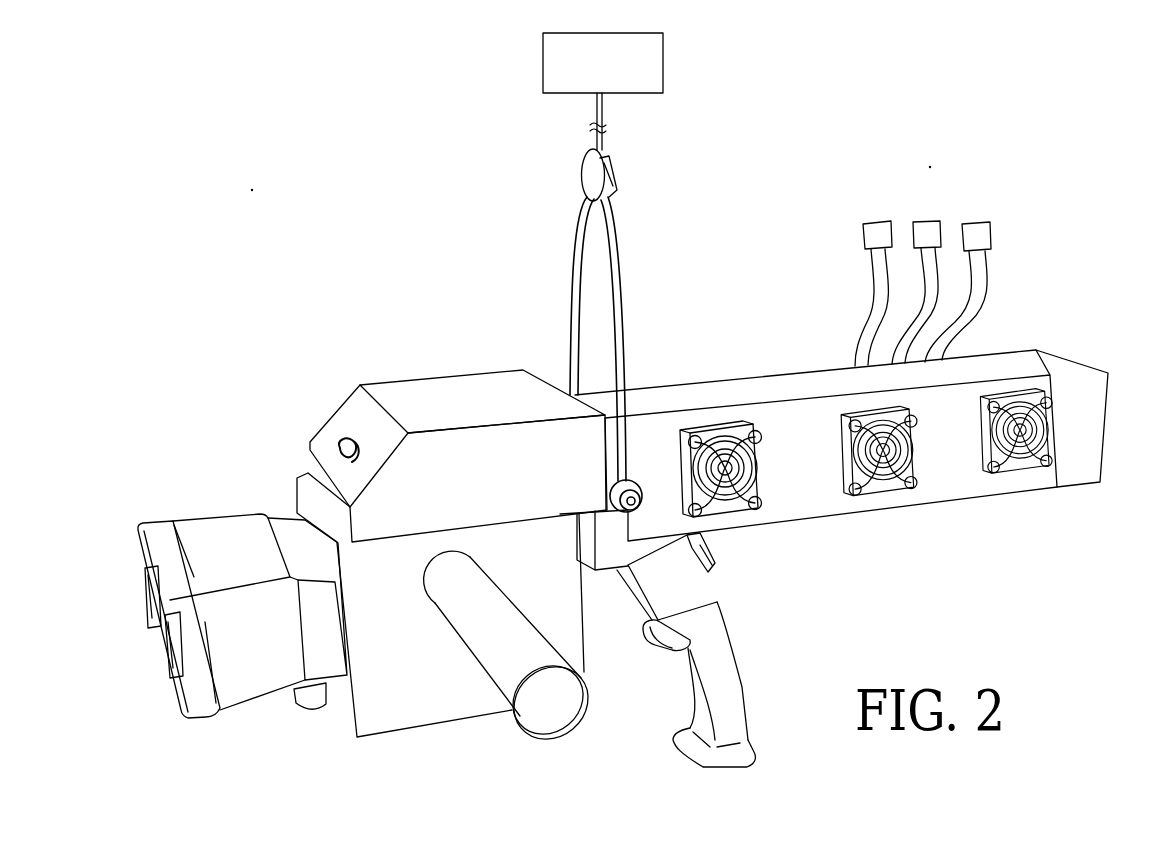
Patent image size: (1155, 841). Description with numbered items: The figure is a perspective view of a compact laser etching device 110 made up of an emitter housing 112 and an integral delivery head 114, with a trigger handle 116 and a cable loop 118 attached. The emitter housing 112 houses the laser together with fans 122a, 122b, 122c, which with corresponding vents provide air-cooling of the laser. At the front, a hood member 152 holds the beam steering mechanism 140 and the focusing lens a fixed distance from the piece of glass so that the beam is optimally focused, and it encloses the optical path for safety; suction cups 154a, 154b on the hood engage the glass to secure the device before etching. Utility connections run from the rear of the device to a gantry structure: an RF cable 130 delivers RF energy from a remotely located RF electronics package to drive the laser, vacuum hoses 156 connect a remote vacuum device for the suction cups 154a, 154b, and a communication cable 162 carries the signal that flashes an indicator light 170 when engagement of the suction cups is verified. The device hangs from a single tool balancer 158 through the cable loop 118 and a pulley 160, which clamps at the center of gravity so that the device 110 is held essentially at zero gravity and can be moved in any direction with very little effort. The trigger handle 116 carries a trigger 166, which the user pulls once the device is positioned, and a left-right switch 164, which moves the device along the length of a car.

The compact laser etching device 110 is at (172, 143).
The emitter housing 112 is at (1068, 341).
The integral delivery head 114 is at (253, 472).
The trigger handle 116 is at (735, 688).
The cable loop 118 is at (625, 270).
The fan 122a is at (728, 514).
The fan 122b is at (882, 495).
The fan 122c is at (1019, 474).
The RF cable 130 is at (975, 273).
The beam steering mechanism 140 is at (437, 706).
The hood member 152 is at (253, 688).
The suction cup 154a is at (146, 597).
The suction cup 154b is at (163, 652).
The vacuum hoses 156 is at (920, 270).
The tool balancer 158 is at (663, 62).
The pulley 160 is at (583, 178).
The communication cable 162 is at (882, 300).
The left-right switch 164 is at (715, 570).
The trigger 166 is at (648, 643).
The indicator light 170 is at (345, 442).